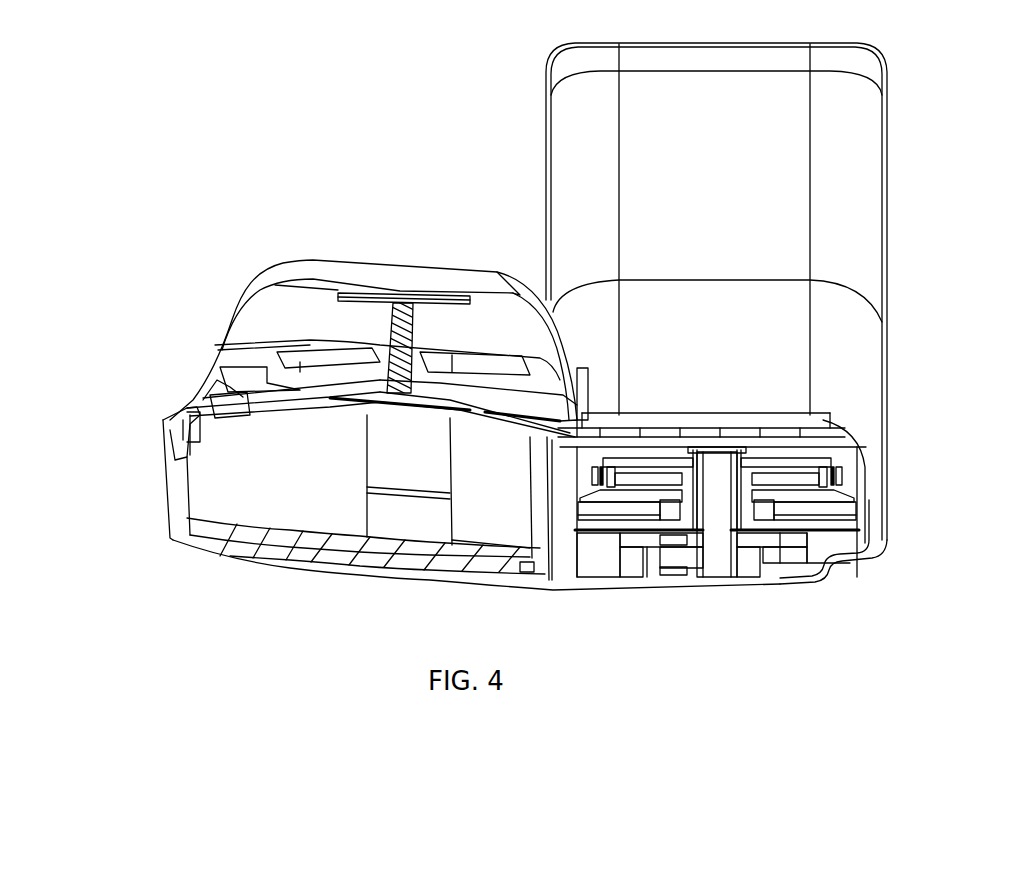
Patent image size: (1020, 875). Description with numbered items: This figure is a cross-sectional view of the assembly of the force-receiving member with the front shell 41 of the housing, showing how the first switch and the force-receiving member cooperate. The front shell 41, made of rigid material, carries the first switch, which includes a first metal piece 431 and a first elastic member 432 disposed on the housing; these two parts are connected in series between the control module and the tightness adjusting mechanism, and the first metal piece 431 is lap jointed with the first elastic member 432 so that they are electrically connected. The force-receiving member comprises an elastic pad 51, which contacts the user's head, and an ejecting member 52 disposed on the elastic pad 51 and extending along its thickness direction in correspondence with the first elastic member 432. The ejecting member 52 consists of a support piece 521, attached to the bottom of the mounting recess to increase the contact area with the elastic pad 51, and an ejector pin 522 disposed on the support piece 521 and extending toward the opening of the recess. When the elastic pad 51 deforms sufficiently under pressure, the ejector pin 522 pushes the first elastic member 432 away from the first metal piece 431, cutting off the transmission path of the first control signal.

The front shell 41 is at (187, 452).
The first metal piece 431 is at (420, 397).
The first elastic member 432 is at (370, 395).
The elastic pad 51 is at (222, 342).
The ejecting member 52 is at (327, 311).
The support piece 521 is at (363, 297).
The ejector pin 522 is at (388, 335).